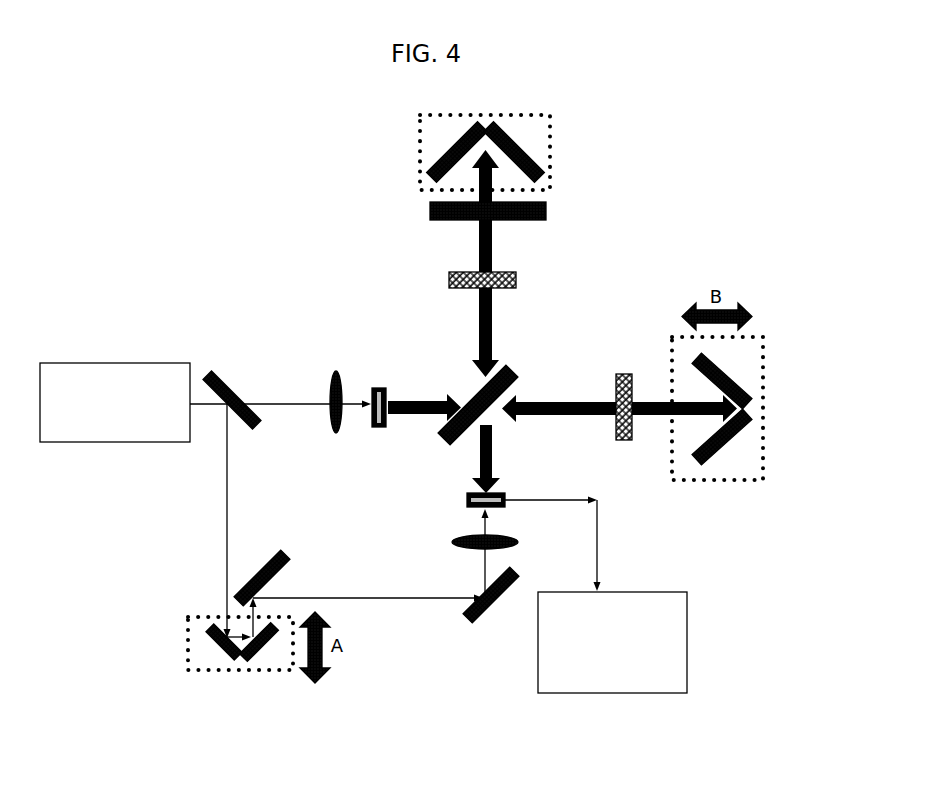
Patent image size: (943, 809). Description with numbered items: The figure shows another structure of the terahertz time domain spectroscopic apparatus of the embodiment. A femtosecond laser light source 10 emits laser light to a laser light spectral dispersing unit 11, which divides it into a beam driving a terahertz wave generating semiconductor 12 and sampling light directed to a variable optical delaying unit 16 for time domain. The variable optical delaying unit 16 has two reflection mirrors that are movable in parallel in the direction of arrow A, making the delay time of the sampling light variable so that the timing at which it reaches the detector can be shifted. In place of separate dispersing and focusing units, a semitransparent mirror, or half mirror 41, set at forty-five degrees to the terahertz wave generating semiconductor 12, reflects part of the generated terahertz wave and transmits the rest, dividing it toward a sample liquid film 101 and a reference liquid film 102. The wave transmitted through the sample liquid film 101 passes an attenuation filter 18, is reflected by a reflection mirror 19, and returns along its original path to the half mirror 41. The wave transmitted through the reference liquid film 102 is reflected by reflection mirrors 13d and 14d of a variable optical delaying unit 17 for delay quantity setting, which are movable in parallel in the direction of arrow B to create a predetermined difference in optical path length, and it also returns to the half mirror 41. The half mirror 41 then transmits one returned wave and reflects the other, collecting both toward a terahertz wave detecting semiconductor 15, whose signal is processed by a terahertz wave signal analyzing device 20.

The femtosecond laser light source 10 is at (112, 362).
The laser light spectral dispersing unit 11 is at (232, 382).
The terahertz wave generating semiconductor 12 is at (378, 388).
The semitransparent mirror (half mirror) 41 is at (512, 370).
The sample liquid film 101 is at (516, 280).
The attenuation filter 18 is at (546, 212).
The reflection mirror 19 is at (549, 135).
The reference liquid film 102 is at (622, 374).
The variable optical delaying unit for delay quantity setting 17 is at (763, 408).
The reflection mirror 13d is at (720, 367).
The reflection mirror 14d is at (723, 437).
The terahertz wave detecting semiconductor 15 is at (507, 495).
The variable optical delaying unit for time domain 16 is at (188, 645).
The terahertz wave signal analyzing device 20 is at (618, 592).